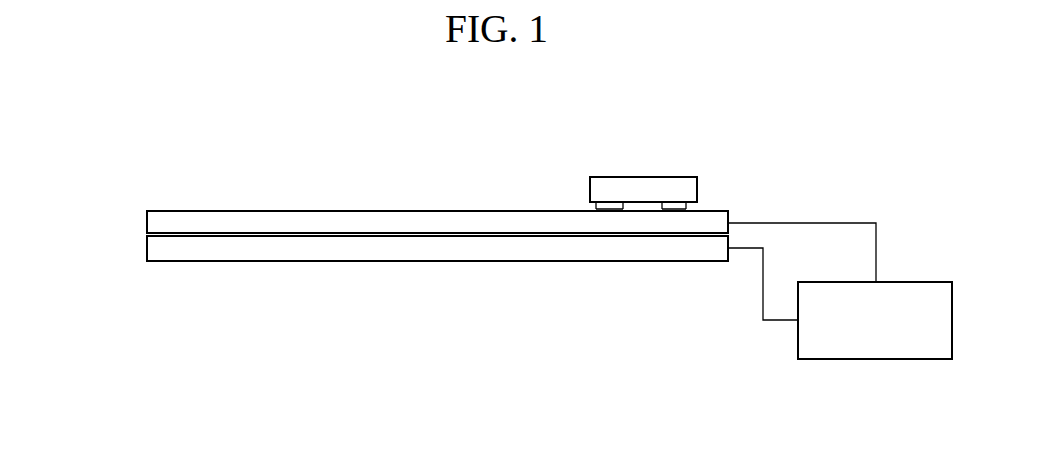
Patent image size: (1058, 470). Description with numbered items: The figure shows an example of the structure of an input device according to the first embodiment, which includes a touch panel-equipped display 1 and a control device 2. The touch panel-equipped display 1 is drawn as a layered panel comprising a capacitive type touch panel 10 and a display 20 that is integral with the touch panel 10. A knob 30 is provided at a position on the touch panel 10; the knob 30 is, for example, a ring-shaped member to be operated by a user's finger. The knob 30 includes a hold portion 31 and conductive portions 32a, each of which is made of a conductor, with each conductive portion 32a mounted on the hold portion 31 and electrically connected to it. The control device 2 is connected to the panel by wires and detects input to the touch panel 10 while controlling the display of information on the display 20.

The touch panel-equipped display 1 is at (387, 237).
The touch panel 10 is at (156, 222).
The display 20 is at (407, 256).
The knob 30 is at (644, 132).
The hold portion 31 is at (667, 184).
The conductive portions 32a is at (600, 206).
The control device 2 is at (920, 283).